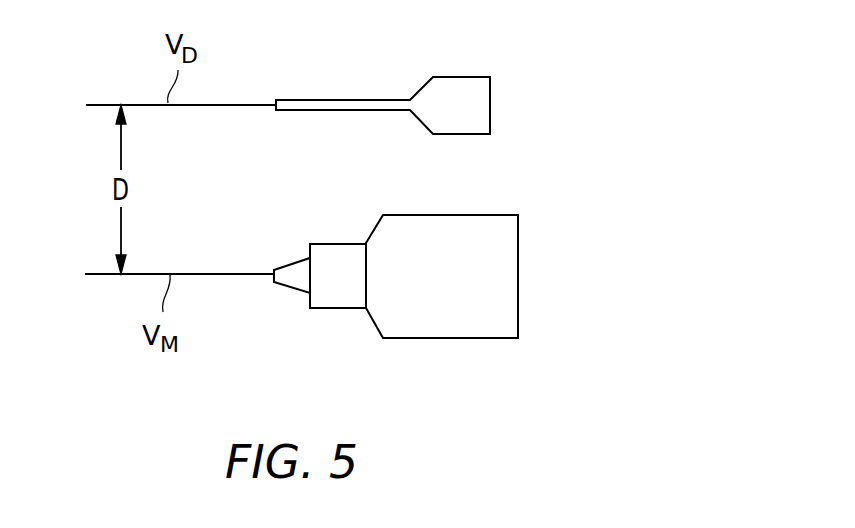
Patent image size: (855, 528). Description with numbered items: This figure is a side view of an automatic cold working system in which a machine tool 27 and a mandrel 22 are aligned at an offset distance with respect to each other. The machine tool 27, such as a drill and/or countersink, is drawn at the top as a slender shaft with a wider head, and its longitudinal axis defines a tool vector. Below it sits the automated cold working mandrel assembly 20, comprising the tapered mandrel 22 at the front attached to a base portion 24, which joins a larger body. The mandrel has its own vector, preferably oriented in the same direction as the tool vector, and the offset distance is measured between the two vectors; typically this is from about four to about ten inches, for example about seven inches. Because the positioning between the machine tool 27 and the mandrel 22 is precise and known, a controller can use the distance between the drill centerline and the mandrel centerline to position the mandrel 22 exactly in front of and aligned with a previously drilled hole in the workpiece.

The automated cold working mandrel assembly 20 is at (498, 276).
The mandrel 22 is at (290, 282).
The base portion 24 is at (337, 297).
The machine tool 27 is at (460, 88).